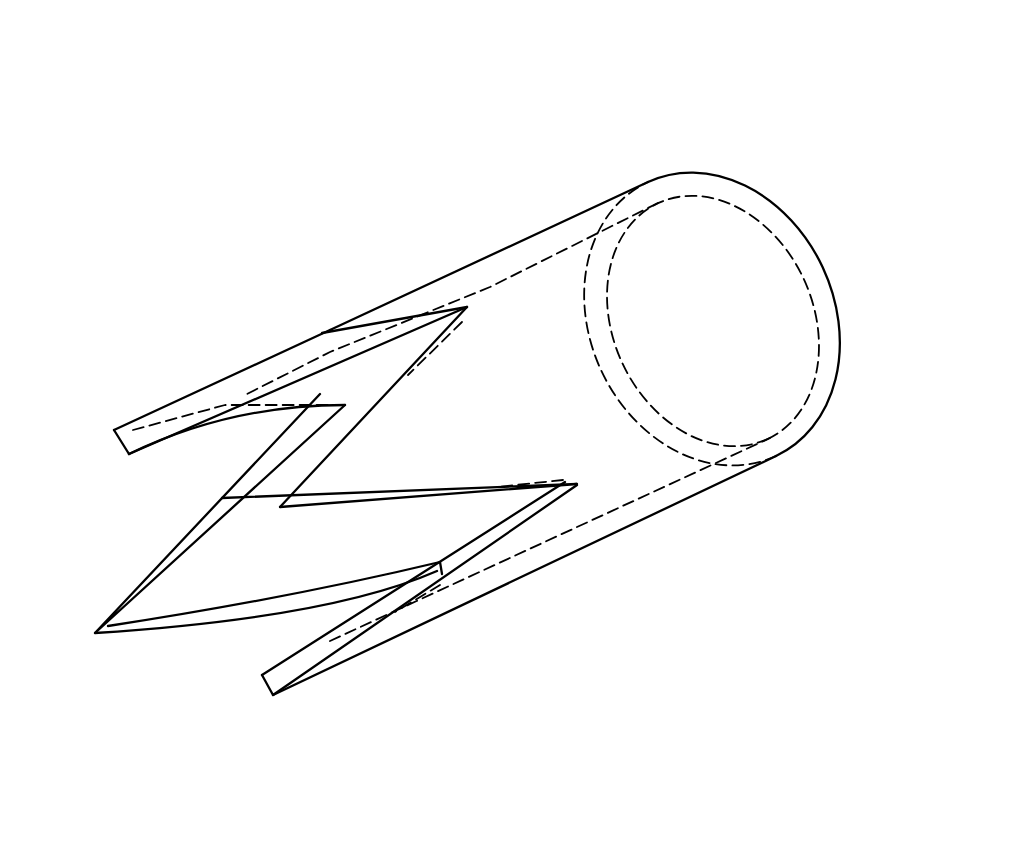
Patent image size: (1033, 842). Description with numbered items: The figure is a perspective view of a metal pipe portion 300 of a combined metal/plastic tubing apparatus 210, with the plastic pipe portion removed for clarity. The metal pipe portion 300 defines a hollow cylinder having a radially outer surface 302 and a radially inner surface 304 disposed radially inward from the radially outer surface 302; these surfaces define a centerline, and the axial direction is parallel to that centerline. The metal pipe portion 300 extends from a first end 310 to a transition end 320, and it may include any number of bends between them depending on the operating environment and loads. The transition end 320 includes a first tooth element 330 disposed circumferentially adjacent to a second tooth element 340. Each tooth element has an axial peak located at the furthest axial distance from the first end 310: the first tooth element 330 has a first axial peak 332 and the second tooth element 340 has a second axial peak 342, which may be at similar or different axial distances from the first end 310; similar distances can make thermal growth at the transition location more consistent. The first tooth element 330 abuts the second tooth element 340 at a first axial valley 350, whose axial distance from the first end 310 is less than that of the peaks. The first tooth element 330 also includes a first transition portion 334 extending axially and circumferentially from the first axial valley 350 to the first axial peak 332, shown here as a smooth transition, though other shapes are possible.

The combined metal/plastic tubing apparatus 210 is at (270, 190).
The metal pipe portion 300 is at (475, 172).
The radially outer surface 302 is at (547, 235).
The radially inner surface 304 is at (317, 563).
The first end 310 is at (715, 190).
The transition end 320 is at (208, 375).
The first tooth element 330 is at (405, 418).
The first axial peak 332 is at (262, 502).
The first transition portion 334 is at (333, 437).
The second tooth element 340 is at (312, 340).
The second axial peak 342 is at (121, 443).
The first axial valley 350 is at (463, 307).